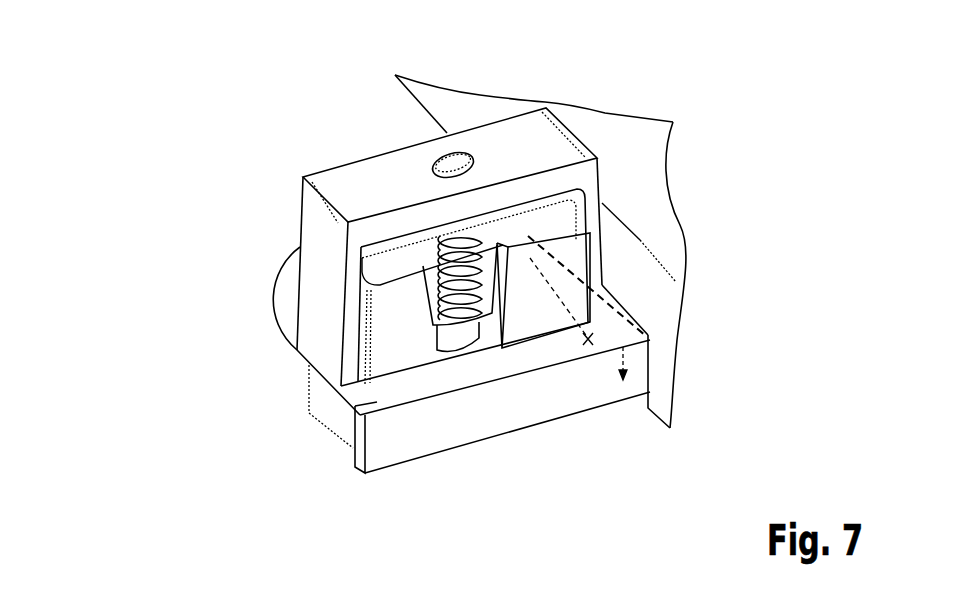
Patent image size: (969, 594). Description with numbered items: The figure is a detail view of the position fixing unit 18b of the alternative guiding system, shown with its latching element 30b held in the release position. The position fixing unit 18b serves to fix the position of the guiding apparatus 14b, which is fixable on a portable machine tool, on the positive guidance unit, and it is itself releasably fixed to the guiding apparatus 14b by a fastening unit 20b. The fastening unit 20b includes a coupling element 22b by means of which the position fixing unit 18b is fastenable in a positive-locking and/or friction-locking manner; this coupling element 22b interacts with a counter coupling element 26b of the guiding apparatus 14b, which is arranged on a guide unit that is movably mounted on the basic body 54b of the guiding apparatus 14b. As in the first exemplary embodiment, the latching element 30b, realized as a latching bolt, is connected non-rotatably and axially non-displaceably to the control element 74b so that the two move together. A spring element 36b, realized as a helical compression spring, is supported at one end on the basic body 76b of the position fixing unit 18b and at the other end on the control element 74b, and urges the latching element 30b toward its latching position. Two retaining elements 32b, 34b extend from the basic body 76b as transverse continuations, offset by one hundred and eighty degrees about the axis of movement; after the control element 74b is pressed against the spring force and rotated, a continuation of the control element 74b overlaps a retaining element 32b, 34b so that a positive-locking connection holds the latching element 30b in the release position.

The guiding apparatus 14b is at (714, 128).
The position fixing unit 18b is at (222, 254).
The fastening unit 20b is at (650, 444).
The coupling element 22b is at (586, 345).
The counter coupling element 26b is at (651, 368).
The latching element 30b is at (450, 338).
The retaining element 32b is at (375, 325).
The retaining element 34b is at (518, 313).
The spring element 36b is at (463, 336).
The basic body of the guiding apparatus 54b is at (638, 128).
The control element 74b is at (383, 185).
The basic body of the position fixing unit 76b is at (350, 412).